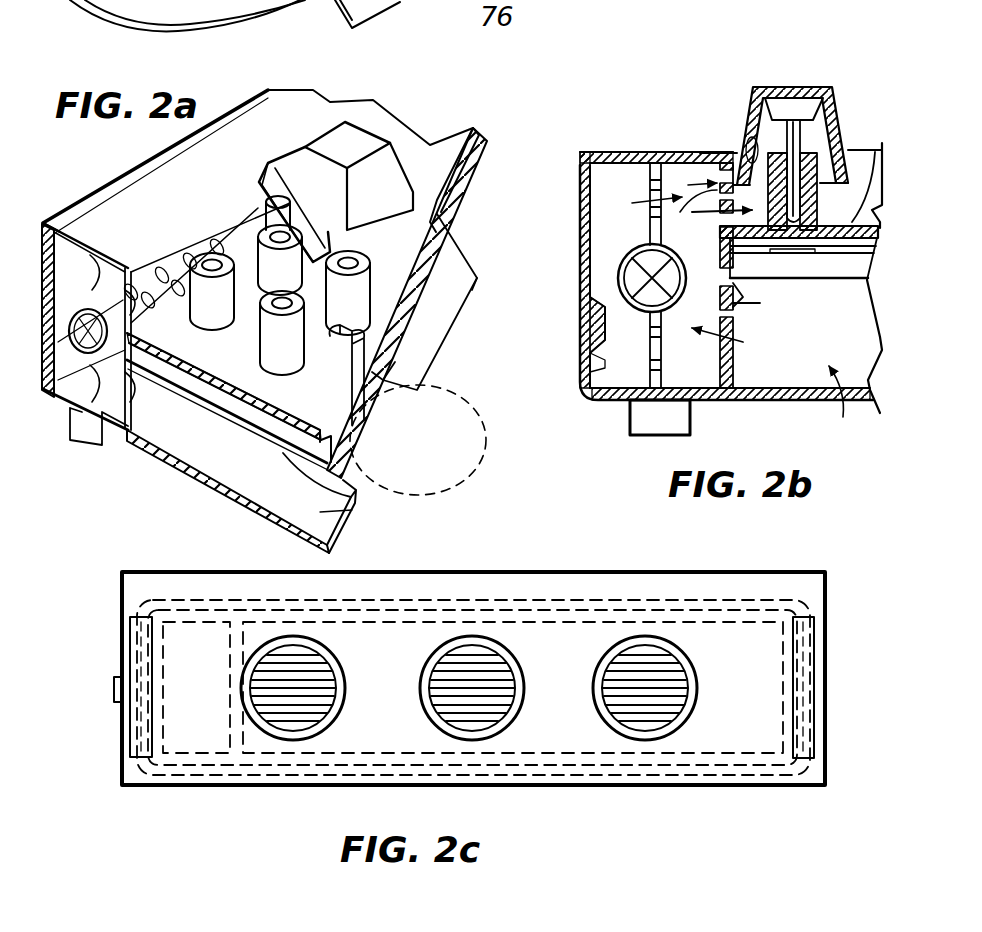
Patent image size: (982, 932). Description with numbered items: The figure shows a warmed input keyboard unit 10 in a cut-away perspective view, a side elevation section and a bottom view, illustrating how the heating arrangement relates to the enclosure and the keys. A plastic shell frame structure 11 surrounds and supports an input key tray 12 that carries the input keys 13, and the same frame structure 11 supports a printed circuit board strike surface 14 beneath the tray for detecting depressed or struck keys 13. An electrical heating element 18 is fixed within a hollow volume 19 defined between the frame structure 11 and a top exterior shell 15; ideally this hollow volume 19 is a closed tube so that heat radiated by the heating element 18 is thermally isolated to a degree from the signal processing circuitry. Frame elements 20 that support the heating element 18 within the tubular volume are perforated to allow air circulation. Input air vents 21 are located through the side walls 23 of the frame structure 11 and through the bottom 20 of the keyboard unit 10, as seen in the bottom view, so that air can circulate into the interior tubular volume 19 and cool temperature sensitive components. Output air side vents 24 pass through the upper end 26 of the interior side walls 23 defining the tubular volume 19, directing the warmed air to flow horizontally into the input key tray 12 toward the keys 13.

In FIG. 2C, the warmed input keyboard unit 10 is at (489, 558).
In FIG. 2A, the plastic shell frame structure 11 is at (192, 479).
In FIG. 2B, the plastic shell frame structure 11 is at (572, 360).
In FIG. 2A, the input key tray 12 is at (406, 266).
In FIG. 2B, the input key tray 12 is at (868, 150).
In FIG. 2C, the input key tray 12 is at (729, 618).
In FIG. 2A, the input keys 13 is at (281, 166).
In FIG. 2B, the input keys 13 is at (793, 88).
In FIG. 2A, the printed circuit board strike surface 14 is at (420, 306).
In FIG. 2B, the printed circuit board strike surface 14 is at (832, 255).
In FIG. 2A, the top exterior shell 15 is at (216, 180).
In FIG. 2B, the top exterior shell 15 is at (678, 150).
In FIG. 2A, the electrical heating element 18 is at (80, 340).
In FIG. 2B, the electrical heating element 18 is at (628, 262).
In FIG. 2C, the electrical heating element 18 is at (630, 596).
In FIG. 2A, the hollow volume 19 is at (46, 222).
In FIG. 2A, the frame elements 20 is at (348, 512).
In FIG. 2B, the frame elements 20 is at (768, 390).
In FIG. 2C, the frame elements 20 is at (571, 678).
In FIG. 2A, the input air vents 21 is at (398, 450).
In FIG. 2B, the input air vents 21 is at (806, 388).
In FIG. 2C, the input air vents 21 is at (425, 710).
In FIG. 2B, the side walls 23 is at (579, 174).
In FIG. 2A, the output air side vents 24 is at (162, 268).
In FIG. 2B, the output air side vents 24 is at (716, 220).
In FIG. 2A, the upper end 26 is at (233, 235).
In FIG. 2B, the upper end 26 is at (748, 140).